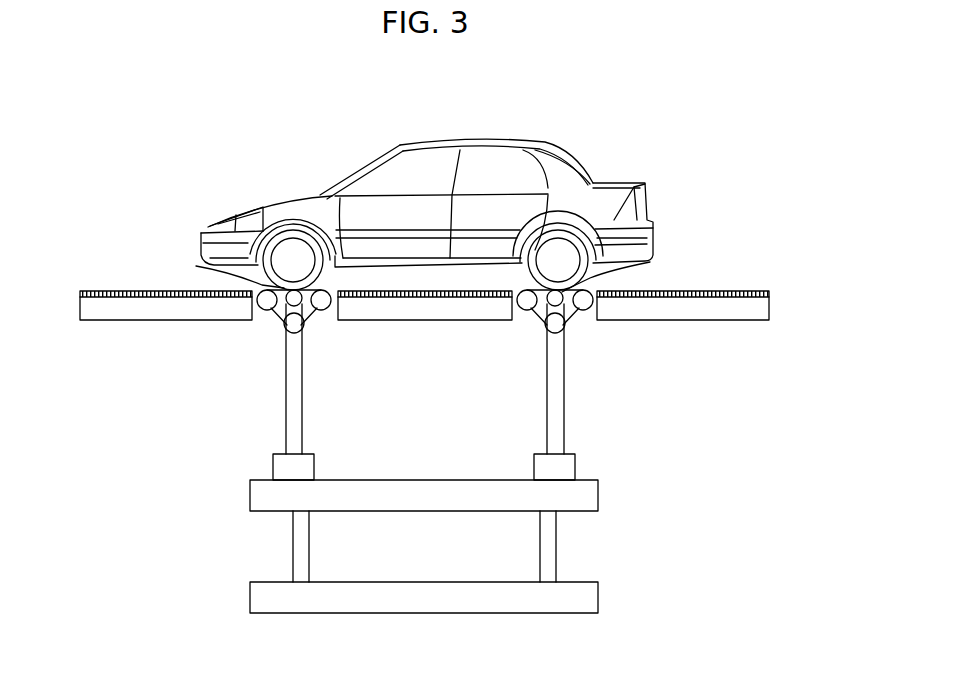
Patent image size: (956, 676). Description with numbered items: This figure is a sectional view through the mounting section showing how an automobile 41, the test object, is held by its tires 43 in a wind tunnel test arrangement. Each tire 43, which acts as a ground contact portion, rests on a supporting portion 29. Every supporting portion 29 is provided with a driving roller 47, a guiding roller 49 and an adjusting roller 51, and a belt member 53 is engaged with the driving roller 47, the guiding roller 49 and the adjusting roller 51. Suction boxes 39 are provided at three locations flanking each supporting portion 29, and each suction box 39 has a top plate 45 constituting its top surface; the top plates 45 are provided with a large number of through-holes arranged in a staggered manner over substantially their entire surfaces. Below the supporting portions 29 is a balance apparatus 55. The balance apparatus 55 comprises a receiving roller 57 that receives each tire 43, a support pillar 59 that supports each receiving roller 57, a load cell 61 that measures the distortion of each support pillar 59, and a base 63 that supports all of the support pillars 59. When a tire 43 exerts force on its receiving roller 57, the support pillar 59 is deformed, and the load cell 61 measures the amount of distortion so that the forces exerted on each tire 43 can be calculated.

The supporting portion 29 is at (252, 345).
The suction box 39 is at (100, 320).
The automobile 41 is at (543, 145).
The tire 43 is at (290, 235).
The top plate 45 is at (131, 291).
The driving roller 47 is at (327, 307).
The guiding roller 49 is at (262, 310).
The adjusting roller 51 is at (301, 327).
The belt member 53 is at (284, 333).
The balance apparatus 55 is at (212, 520).
The receiving roller 57 is at (288, 299).
The support pillar 59 is at (284, 438).
The load cell 61 is at (315, 464).
The base 63 is at (578, 539).